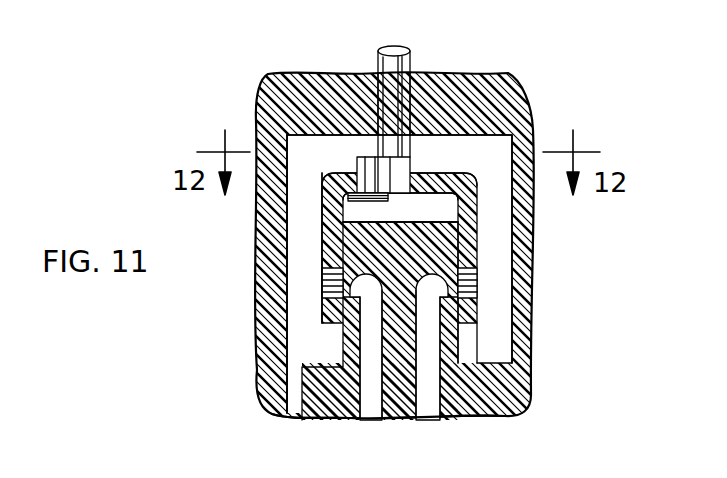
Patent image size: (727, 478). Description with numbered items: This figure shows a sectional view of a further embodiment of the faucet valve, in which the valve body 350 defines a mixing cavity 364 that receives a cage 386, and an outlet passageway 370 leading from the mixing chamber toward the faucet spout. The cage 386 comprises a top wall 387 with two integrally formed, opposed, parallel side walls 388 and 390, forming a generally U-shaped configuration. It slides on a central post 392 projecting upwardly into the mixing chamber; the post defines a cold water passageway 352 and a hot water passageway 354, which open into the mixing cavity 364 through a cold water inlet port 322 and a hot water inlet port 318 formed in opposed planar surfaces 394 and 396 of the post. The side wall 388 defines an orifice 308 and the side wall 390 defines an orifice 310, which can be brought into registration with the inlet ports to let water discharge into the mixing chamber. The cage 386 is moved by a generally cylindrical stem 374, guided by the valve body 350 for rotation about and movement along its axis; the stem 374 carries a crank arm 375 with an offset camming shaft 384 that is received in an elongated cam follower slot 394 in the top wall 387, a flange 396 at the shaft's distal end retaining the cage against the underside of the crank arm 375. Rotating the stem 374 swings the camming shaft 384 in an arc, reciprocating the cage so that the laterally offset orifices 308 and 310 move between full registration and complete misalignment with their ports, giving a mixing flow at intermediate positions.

The orifice 308 is at (475, 280).
The orifice 310 is at (338, 290).
The hot water inlet port 318 is at (351, 273).
The cold water inlet port 322 is at (452, 277).
The valve body 350 is at (512, 108).
The cold water passageway 352 is at (420, 423).
The hot water passageway 354 is at (370, 415).
The mixing cavity 364 is at (450, 127).
The outlet passageway 370 is at (290, 387).
The stem 374 is at (410, 67).
The crank arm 375 is at (373, 133).
The camming shaft 384 is at (357, 170).
The cage 386 is at (478, 210).
The top wall 387 is at (425, 175).
The side wall 388 is at (472, 238).
The side wall 390 is at (322, 232).
The central post 392 is at (412, 217).
The planar surface 394 is at (400, 188).
The planar surface 396 is at (322, 212).